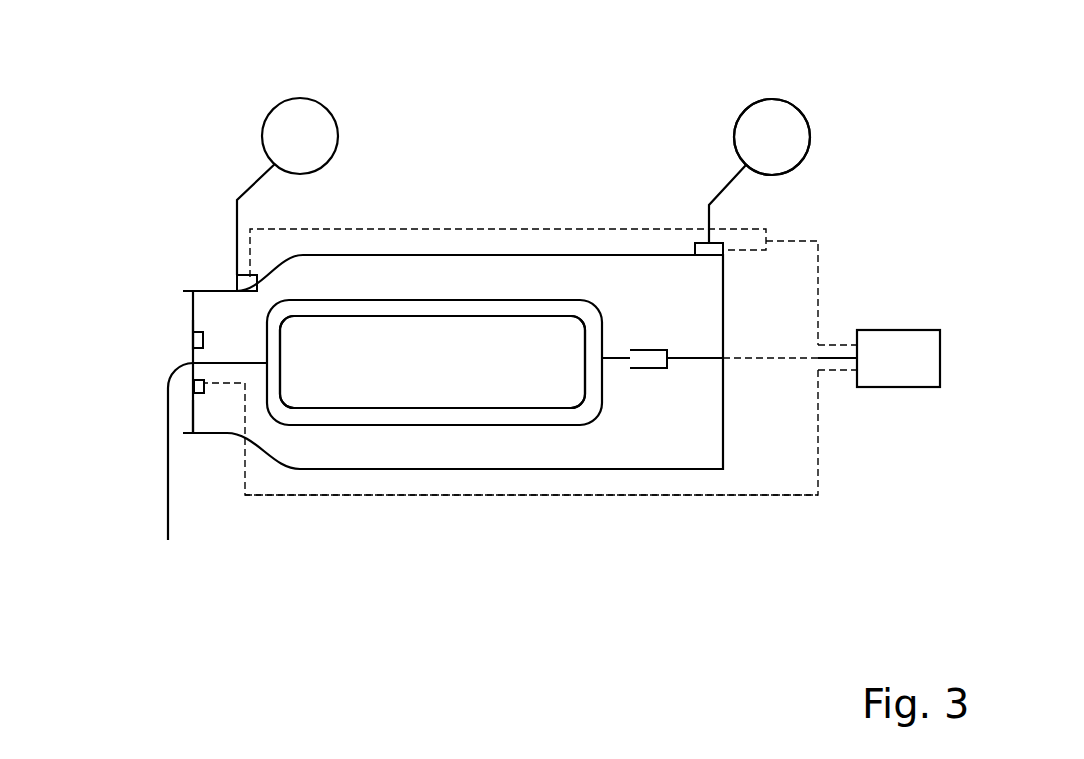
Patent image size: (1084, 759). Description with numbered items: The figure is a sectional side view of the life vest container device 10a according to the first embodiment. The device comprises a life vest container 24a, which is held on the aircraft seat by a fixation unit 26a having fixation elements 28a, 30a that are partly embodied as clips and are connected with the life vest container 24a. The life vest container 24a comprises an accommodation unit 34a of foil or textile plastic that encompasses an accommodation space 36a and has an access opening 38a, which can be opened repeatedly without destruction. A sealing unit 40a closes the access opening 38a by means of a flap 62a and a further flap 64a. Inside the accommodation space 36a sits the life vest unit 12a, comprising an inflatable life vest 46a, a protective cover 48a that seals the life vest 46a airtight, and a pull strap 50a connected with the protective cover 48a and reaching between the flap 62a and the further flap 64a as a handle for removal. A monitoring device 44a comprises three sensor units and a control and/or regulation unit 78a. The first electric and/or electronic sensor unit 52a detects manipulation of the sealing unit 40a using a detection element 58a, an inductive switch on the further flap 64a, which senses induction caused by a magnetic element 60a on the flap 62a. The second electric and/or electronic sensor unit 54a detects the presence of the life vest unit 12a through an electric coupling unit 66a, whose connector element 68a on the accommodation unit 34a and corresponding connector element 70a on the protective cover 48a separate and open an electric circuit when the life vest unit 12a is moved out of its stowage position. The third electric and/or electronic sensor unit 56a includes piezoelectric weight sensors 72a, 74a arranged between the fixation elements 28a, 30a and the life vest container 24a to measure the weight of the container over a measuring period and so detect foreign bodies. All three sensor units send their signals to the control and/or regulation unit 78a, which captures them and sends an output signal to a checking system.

The life vest container device 10a is at (172, 112).
The life vest unit 12a is at (607, 423).
The life vest container 24a is at (312, 503).
The fixation unit 26a is at (815, 140).
The fixation element 28a is at (300, 97).
The fixation element 30a is at (772, 99).
The accommodation unit 34a is at (396, 470).
The accommodation space 36a is at (500, 269).
The access opening 38a is at (223, 425).
The sealing unit 40a is at (170, 358).
The monitoring device 44a is at (515, 170).
The life vest 46a is at (552, 363).
The protective cover 48a is at (483, 427).
The pull strap 50a is at (168, 517).
The first electric and/or electronic sensor unit 52a is at (187, 348).
The second electric and/or electronic sensor unit 54a is at (687, 377).
The third electric and/or electronic sensor unit 56a is at (770, 232).
The detection element 58a is at (192, 392).
The magnetic element 60a is at (192, 335).
The flap 62a is at (192, 305).
The further flap 64a is at (193, 420).
The electric coupling unit 66a is at (650, 372).
The connector element 68a is at (652, 348).
The corresponding connector element 70a is at (617, 357).
The weight sensor 72a is at (237, 283).
The weight sensor 74a is at (703, 243).
The control and/or regulation unit 78a is at (892, 350).